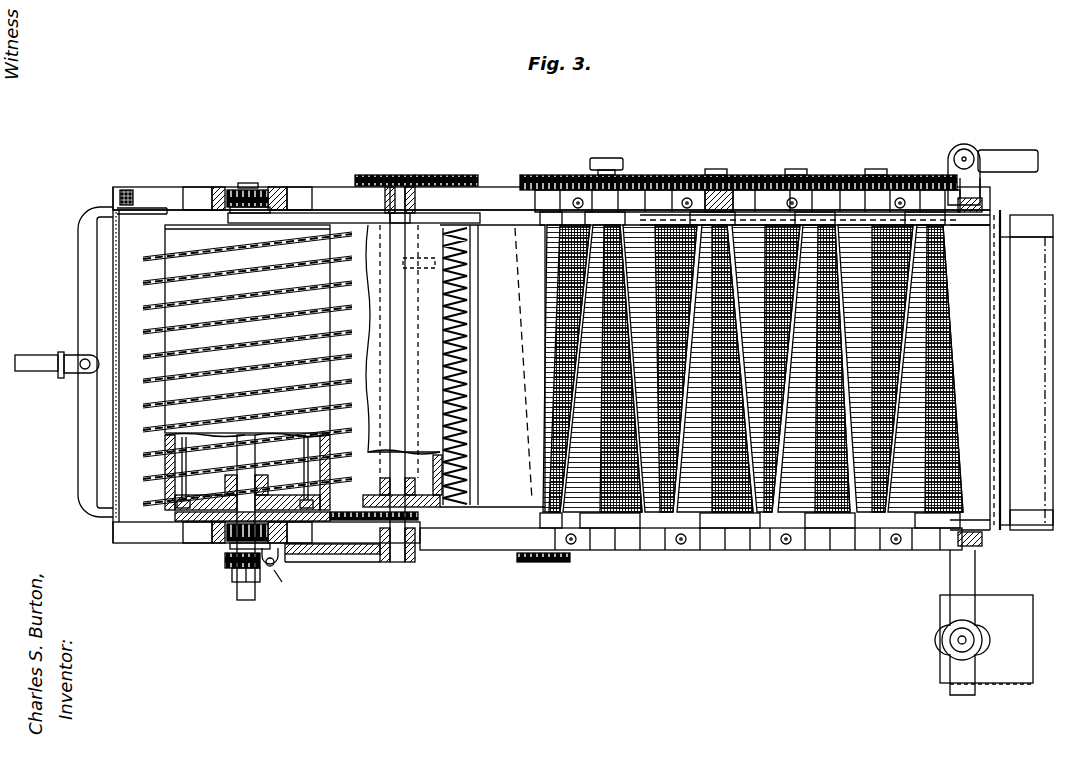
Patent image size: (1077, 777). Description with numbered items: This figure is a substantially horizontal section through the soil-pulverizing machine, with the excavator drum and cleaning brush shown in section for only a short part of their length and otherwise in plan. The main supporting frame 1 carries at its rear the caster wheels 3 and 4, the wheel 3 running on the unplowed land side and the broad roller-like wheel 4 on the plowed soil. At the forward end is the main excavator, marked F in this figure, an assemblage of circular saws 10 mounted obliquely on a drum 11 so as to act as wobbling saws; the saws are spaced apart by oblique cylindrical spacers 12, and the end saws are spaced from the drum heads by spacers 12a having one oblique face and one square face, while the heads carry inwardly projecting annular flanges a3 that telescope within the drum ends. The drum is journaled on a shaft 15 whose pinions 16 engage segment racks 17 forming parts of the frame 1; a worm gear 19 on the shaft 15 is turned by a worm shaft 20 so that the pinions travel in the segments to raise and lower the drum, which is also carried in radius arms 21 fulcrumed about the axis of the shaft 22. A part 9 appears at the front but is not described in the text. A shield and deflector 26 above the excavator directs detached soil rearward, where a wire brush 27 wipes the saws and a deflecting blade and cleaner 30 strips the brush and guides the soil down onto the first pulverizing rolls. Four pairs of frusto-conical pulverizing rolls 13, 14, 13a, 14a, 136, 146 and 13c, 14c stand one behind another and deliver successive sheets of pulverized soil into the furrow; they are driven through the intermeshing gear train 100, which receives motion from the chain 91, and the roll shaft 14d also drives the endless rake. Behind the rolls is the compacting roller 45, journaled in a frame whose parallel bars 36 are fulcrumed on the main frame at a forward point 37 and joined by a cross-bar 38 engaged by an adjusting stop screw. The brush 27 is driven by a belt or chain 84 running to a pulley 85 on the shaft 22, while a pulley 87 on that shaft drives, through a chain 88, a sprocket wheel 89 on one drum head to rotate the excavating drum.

The main supporting frame 1 is at (489, 195).
The caster wheel 3 is at (1010, 150).
The caster wheel 4 is at (1010, 670).
The inlet nozzle 9 is at (32, 356).
The circular saws 10 is at (300, 318).
The drum 11 is at (175, 442).
The cylindrical spacers 12 is at (145, 456).
The end spacers 12a is at (337, 494).
The pulverizing roll 13 is at (545, 248).
The pulverizing roll 13a is at (660, 515).
The pulverizing roll 136 is at (770, 515).
The conical roll 13c is at (870, 515).
The pulverizing roll 14 is at (600, 277).
The pulverizing roll 14a is at (708, 515).
The pulverizing roll 146 is at (820, 515).
The conical roll 14c is at (926, 515).
The shaft 14d is at (607, 158).
The shaft 15 is at (250, 445).
The pinions 16 is at (262, 190).
The segment racks 17 is at (218, 190).
The worm gear 19 is at (228, 562).
The worm shaft 20 is at (278, 575).
The radius arms 21 is at (350, 222).
The shaft 22 is at (397, 562).
The shield and deflector 26 is at (113, 288).
The wire brush 27 is at (445, 388).
The deflecting blade and cleaner 30 is at (524, 500).
The parallel bars 36 is at (958, 228).
The fulcrum point 37 is at (722, 190).
The cross-bar 38 is at (997, 298).
The compacting roller 45 is at (1035, 372).
The belt or chain 84 is at (445, 175).
The pulley 85 is at (378, 175).
The pulley 87 is at (430, 520).
The chain 88 is at (375, 520).
The sprocket wheel 89 is at (190, 521).
The chain 91 is at (575, 560).
The gear train 100 is at (700, 163).
The frame F is at (247, 329).
The annular flanges a3 is at (332, 466).